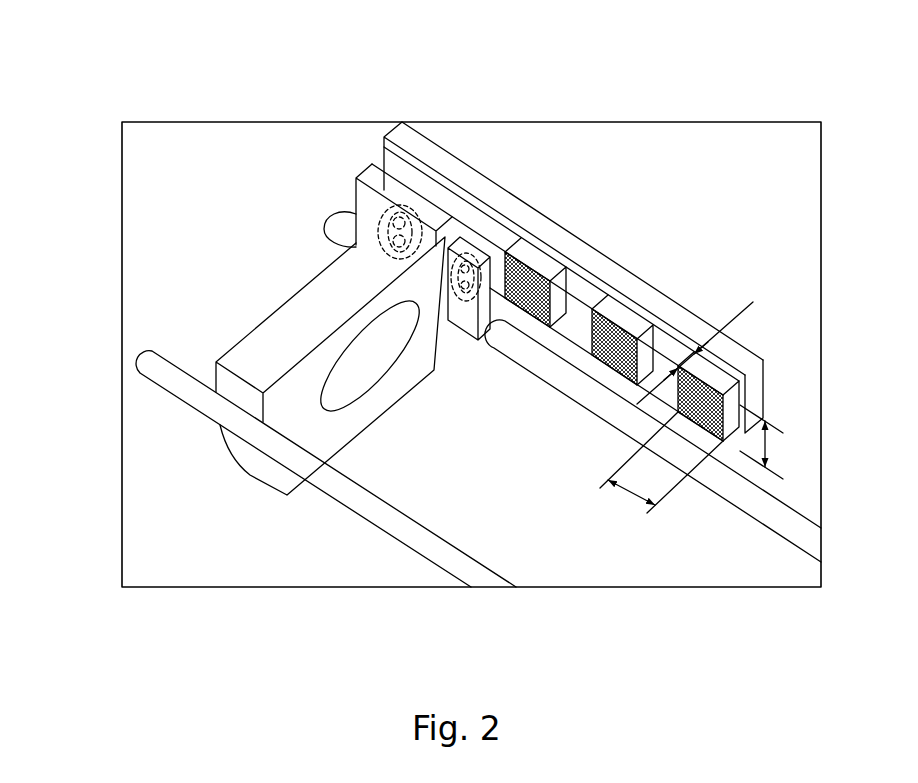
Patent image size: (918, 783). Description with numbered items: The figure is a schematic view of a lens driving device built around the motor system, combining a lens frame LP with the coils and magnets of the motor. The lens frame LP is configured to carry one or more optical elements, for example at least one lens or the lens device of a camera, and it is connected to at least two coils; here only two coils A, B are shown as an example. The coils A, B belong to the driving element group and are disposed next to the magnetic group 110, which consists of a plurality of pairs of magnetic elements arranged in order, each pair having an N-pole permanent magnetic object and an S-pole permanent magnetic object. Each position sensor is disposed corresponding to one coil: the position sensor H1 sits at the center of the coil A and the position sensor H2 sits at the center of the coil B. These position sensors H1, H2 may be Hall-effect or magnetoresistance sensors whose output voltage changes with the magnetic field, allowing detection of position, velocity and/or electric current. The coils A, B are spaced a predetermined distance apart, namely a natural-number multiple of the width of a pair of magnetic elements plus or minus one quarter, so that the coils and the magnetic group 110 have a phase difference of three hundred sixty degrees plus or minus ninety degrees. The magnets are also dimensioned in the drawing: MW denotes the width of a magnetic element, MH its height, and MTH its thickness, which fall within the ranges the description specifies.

The lens frame LP is at (294, 330).
The coil A is at (396, 183).
The coil B is at (480, 235).
The magnetic group 110 is at (618, 272).
The thickness of the magnetic element MTH is at (682, 322).
The height of the magnetic element MH is at (780, 442).
The width of the magnetic element MW is at (649, 470).
The position sensor H1 is at (394, 242).
The position sensor H2 is at (455, 290).